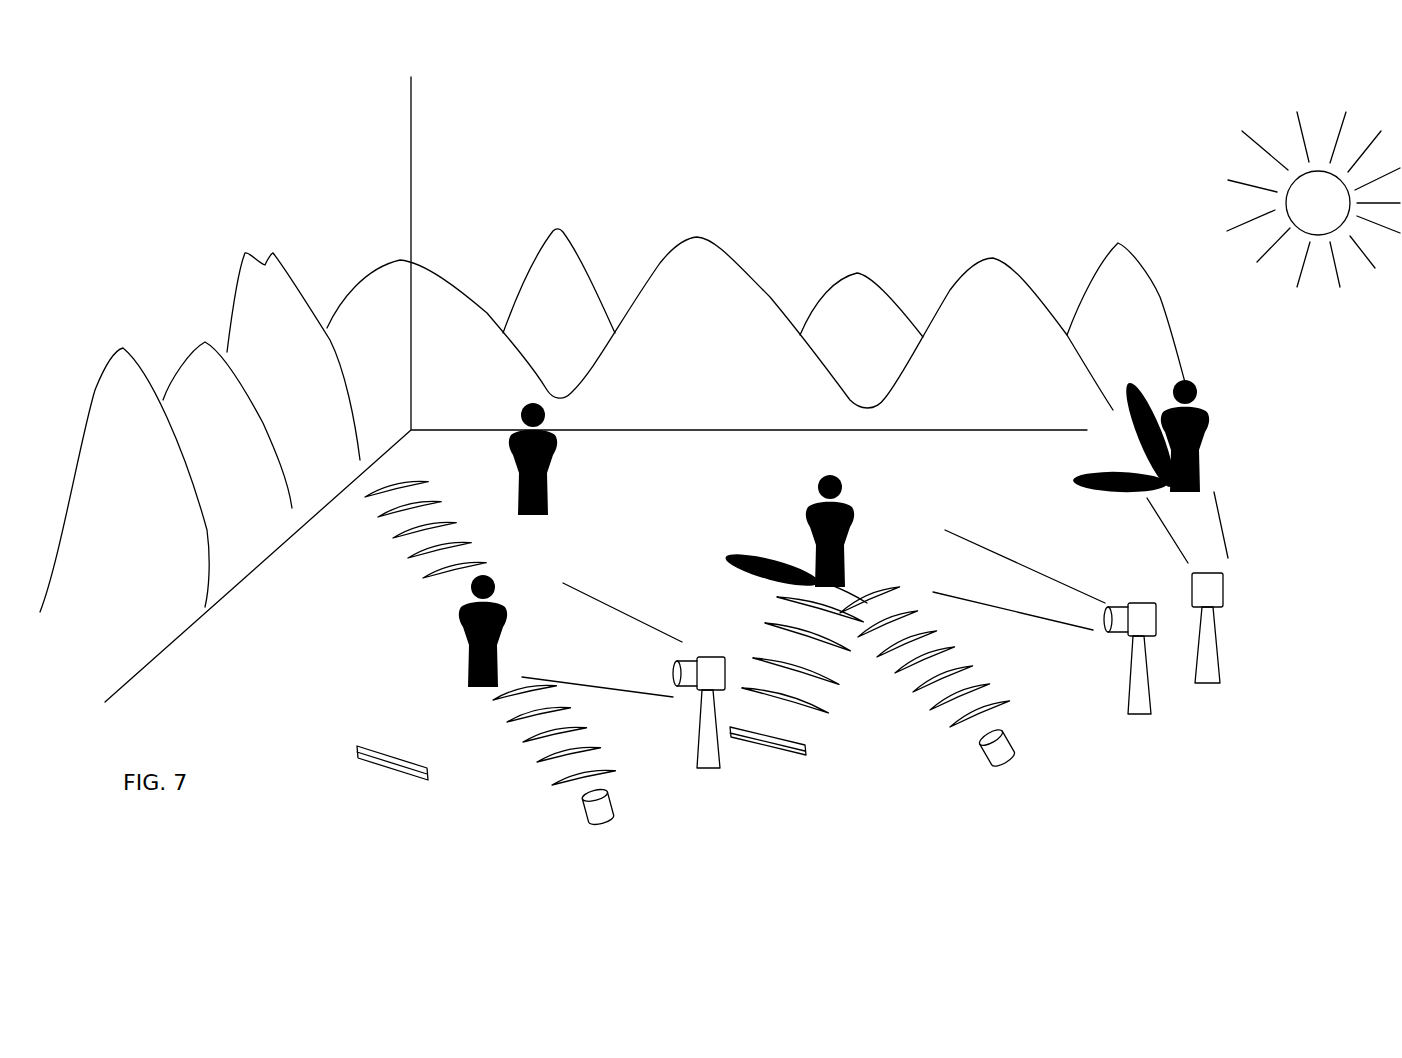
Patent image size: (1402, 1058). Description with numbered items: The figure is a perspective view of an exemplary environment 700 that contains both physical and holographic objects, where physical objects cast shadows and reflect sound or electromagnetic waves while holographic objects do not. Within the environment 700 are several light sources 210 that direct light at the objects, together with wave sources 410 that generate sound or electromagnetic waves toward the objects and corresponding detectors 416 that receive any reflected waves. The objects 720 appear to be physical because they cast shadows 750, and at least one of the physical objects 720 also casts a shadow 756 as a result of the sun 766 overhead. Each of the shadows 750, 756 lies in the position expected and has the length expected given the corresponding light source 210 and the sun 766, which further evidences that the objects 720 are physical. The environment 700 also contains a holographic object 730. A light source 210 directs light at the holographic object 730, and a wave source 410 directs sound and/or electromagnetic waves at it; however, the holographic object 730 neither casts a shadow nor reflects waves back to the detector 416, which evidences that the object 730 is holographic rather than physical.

The environment 700 is at (335, 148).
The sun 766 is at (1340, 218).
The objects 720 is at (820, 483).
The holographic object 730 is at (470, 637).
The shadows 750 is at (758, 560).
The shadow 756 is at (1125, 383).
The light sources 210 is at (710, 753).
The detectors 416 is at (357, 750).
The wave sources 410 is at (607, 807).